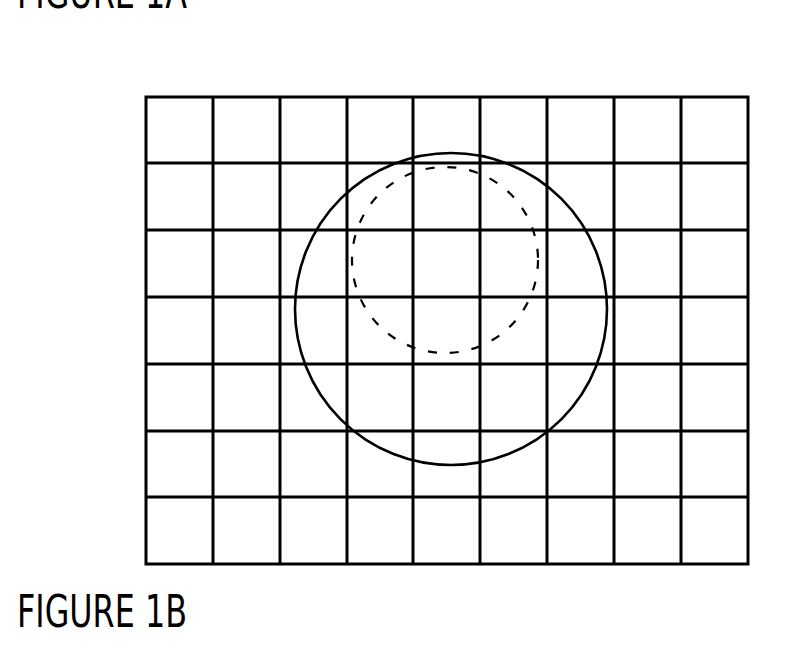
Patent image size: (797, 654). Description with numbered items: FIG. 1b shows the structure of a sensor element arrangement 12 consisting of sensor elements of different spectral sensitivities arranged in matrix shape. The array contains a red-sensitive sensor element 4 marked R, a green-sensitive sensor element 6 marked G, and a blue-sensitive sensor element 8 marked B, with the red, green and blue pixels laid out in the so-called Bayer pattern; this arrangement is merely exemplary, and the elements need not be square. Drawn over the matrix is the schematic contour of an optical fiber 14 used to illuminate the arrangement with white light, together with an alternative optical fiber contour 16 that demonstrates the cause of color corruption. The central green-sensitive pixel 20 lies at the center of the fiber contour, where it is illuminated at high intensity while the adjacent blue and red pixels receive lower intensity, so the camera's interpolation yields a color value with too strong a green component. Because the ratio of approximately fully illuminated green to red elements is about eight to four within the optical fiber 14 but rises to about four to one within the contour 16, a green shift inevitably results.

The sensor element 4 is at (330, 97).
The sensor element 6 is at (225, 97).
The sensor element 8 is at (273, 160).
The sensor element arrangement 12 is at (432, 64).
The optical fiber 14 is at (485, 156).
The alternative optical fiber contour 16 is at (465, 166).
The central green-sensitive pixel 20 is at (478, 300).